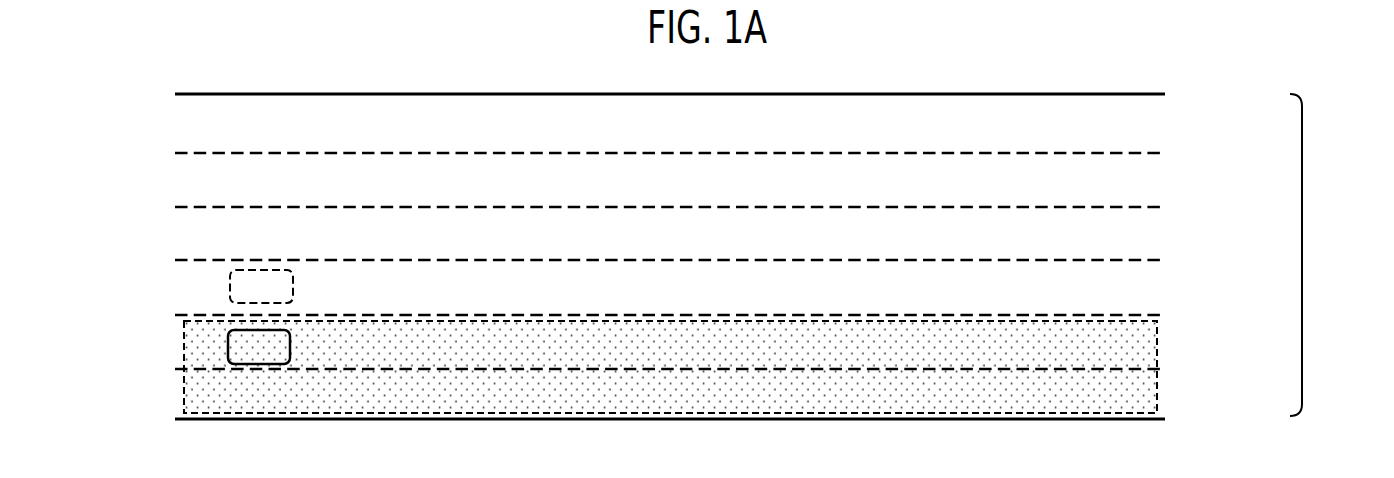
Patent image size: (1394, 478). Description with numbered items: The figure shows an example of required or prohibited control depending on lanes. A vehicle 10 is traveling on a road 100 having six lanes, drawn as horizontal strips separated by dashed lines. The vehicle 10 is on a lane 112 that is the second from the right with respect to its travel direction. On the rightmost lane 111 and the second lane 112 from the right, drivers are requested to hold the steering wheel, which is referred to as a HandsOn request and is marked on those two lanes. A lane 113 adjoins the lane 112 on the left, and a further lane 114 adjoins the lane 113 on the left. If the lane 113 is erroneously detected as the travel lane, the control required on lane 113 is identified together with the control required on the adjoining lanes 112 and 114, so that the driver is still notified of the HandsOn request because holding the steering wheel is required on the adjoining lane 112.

The vehicle 10 is at (228, 347).
The road 100 is at (1302, 254).
The rightmost lane 111 is at (1138, 395).
The lane 112 is at (1138, 348).
The lane 113 is at (1138, 294).
The lane 114 is at (1138, 238).